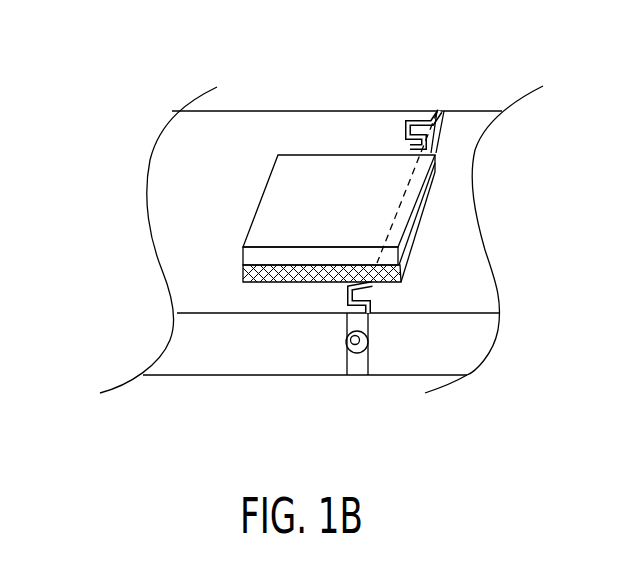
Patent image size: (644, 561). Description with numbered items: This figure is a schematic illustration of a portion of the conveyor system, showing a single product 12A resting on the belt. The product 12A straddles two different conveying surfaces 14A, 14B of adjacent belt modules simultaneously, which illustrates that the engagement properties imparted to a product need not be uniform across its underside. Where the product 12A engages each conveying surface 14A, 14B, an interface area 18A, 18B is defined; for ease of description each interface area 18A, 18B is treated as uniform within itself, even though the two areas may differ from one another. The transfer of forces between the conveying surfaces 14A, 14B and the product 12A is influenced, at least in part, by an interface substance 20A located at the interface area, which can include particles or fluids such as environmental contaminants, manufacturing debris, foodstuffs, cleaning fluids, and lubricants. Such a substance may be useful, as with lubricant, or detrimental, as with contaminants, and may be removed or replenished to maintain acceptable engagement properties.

The product 12A is at (329, 248).
The conveying surface 14A is at (190, 185).
The conveying surface 14B is at (458, 233).
The interface area 18A is at (360, 170).
The interface area 18B is at (413, 197).
The interface substance 20A is at (260, 282).